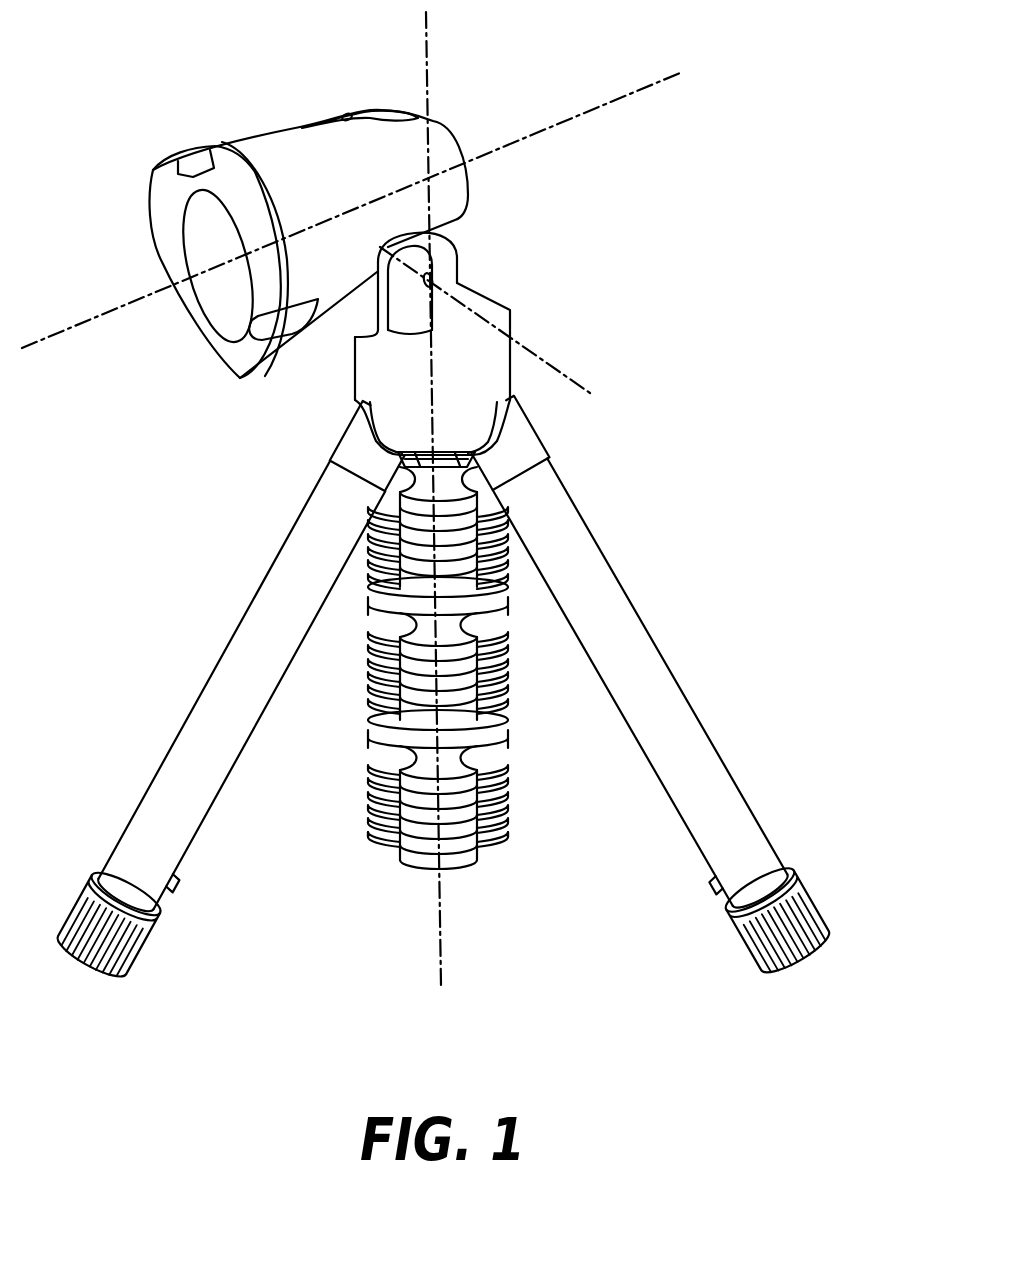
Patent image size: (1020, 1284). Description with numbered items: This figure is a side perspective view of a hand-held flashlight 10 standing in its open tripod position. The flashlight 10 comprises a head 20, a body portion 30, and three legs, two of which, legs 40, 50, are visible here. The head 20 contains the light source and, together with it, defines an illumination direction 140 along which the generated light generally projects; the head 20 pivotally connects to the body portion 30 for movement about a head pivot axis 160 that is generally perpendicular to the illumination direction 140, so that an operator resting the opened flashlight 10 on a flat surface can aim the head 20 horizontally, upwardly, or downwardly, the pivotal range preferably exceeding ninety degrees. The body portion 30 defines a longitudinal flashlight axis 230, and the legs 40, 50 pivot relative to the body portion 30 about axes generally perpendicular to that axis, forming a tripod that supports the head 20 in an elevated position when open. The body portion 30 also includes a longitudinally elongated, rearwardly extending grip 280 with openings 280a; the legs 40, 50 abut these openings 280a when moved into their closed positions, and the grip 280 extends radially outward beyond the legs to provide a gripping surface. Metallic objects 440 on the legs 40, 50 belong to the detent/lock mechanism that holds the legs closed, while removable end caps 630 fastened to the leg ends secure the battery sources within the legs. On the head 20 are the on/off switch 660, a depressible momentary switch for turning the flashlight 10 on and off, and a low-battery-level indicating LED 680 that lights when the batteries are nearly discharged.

The hand-held flashlight 10 is at (125, 92).
The head 20 is at (309, 198).
The body portion 30 is at (512, 306).
The leg 40 is at (157, 772).
The leg 50 is at (725, 772).
The illumination direction 140 is at (657, 83).
The head pivot axis 160 is at (577, 383).
The longitudinal flashlight axis 230 is at (441, 917).
The grip 280 is at (363, 773).
The openings 280a is at (395, 838).
The metallic objects 440 is at (173, 880).
The removable end caps 630 is at (142, 944).
The on/off switch 660 is at (388, 110).
The low-battery-level indicating LED 680 is at (346, 114).